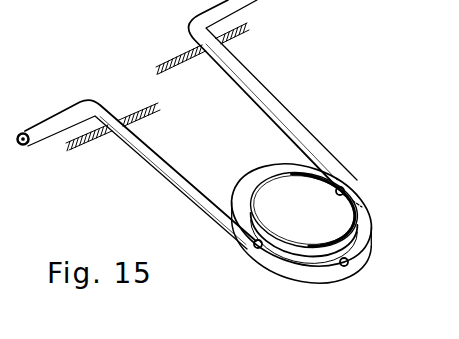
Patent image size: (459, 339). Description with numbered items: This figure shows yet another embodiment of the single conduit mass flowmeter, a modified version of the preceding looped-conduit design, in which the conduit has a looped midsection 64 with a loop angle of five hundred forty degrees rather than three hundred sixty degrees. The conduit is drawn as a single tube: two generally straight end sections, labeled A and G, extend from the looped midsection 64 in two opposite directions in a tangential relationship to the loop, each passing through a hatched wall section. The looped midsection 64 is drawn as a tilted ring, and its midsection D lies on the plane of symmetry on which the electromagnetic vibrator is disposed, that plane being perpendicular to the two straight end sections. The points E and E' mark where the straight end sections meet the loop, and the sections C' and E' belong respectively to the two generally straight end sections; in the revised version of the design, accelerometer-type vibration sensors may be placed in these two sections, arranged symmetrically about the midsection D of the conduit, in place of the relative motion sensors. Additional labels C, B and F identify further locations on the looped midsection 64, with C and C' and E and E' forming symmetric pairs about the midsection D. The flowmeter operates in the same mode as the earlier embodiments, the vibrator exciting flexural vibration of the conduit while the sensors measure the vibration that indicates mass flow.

The first wire rod A is at (119, 138).
The second wire rod G is at (222, 58).
The midsection of the conduit D is at (249, 171).
The looped midsection 64 is at (268, 163).
The inner band segment C is at (356, 210).
The new section C' is at (272, 257).
The lower ring portion B is at (347, 272).
The fastening bead F is at (350, 255).
The rod end E is at (226, 258).
The new section E' is at (378, 178).